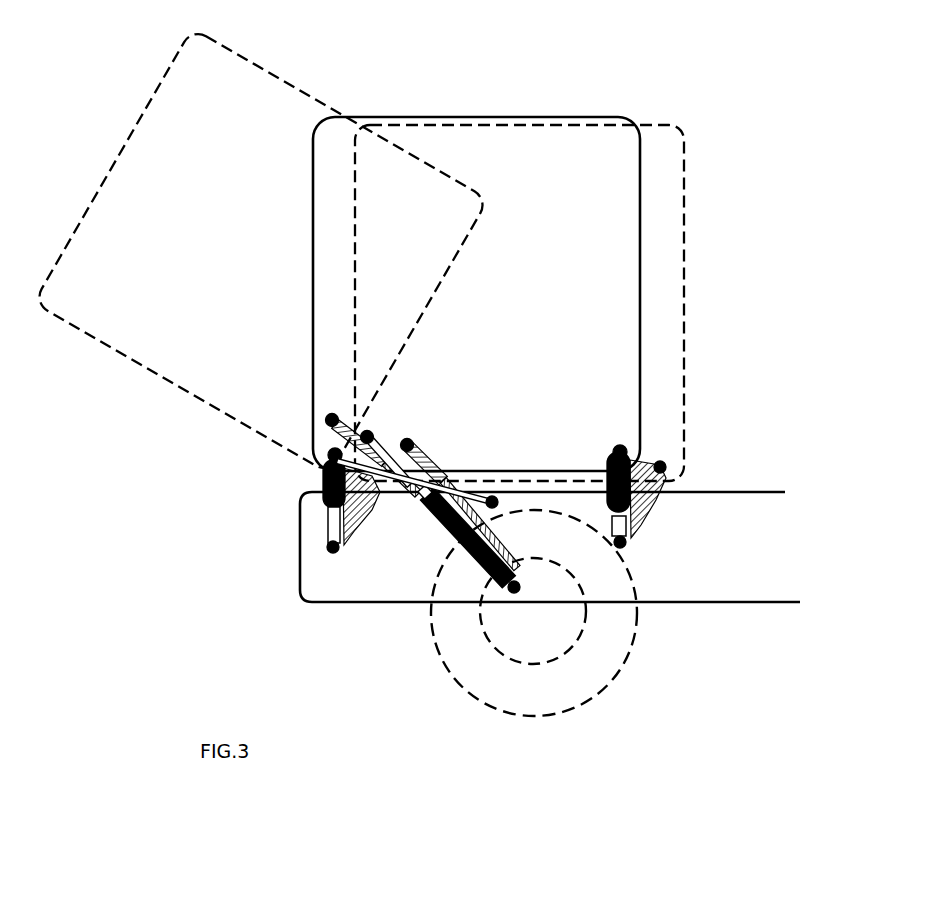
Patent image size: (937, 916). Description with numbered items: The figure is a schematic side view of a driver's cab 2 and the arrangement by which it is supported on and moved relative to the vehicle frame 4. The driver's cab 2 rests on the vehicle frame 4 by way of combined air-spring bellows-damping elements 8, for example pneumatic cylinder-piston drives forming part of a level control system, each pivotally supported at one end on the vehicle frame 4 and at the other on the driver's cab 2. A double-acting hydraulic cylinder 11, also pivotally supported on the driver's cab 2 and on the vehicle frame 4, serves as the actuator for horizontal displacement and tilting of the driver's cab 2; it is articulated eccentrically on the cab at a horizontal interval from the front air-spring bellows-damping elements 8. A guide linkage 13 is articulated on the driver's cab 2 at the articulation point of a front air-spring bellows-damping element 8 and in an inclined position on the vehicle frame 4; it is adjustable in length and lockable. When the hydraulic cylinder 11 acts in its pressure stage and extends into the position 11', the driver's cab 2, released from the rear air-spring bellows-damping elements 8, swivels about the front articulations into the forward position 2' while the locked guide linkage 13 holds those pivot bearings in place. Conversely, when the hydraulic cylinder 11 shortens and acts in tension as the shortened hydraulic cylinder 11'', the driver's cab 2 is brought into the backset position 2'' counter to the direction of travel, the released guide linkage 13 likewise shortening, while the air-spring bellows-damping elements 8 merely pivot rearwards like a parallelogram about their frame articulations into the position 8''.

The driver's cab 2 is at (543, 294).
The forward position 2' is at (261, 251).
The backset position 2'' is at (569, 303).
The vehicle frame 4 is at (687, 590).
The air-spring bellows-damping element 8 is at (494, 467).
The pivoted position of air-spring bellows-damping elements 8'' is at (497, 509).
The hydraulic cylinder 11 is at (399, 572).
The extended position of hydraulic cylinder 11' is at (369, 419).
The shortened hydraulic cylinder 11'' is at (460, 494).
The guide linkage 13 is at (415, 492).